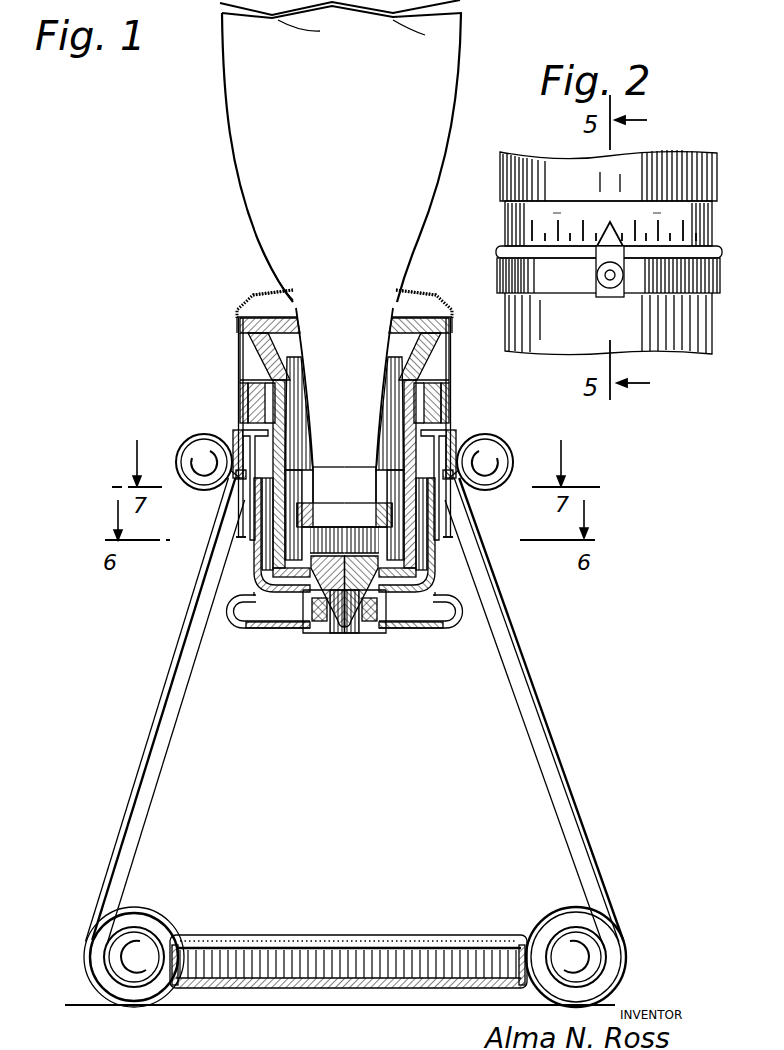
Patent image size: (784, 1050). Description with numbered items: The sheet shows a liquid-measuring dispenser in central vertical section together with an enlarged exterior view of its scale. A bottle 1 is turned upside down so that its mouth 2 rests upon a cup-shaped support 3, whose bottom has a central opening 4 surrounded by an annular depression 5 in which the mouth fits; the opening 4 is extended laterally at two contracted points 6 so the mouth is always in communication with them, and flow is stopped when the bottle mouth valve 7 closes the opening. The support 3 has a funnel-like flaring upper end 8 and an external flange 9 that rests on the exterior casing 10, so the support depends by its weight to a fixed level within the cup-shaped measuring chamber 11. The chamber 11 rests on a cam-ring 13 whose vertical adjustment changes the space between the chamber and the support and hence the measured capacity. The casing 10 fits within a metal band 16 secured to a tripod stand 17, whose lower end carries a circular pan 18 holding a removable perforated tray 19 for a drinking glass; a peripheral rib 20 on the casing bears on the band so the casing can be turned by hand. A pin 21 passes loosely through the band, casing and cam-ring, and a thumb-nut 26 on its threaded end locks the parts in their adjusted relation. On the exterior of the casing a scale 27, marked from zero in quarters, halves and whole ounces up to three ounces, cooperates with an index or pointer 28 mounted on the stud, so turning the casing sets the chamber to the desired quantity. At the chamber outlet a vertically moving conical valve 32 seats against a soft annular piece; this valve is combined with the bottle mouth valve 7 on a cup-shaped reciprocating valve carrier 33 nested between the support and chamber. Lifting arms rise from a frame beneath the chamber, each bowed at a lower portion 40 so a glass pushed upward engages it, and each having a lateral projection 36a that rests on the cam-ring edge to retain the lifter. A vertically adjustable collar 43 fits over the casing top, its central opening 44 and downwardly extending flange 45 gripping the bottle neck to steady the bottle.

In FIG. 1, the bottle 1 is at (246, 146).
In FIG. 1, the mouth 2 is at (345, 505).
In FIG. 1, the support 3 is at (273, 365).
In FIG. 1, the central opening 4 is at (357, 522).
In FIG. 1, the annular depression 5 is at (395, 513).
In FIG. 1, the laterally extended openings 6 is at (300, 528).
In FIG. 1, the bottle mouth valve 7 is at (374, 526).
In FIG. 1, the flaring upper end 8 is at (240, 326).
In FIG. 1, the external flange 9 is at (450, 316).
In FIG. 1, the exterior casing 10 is at (240, 388).
In FIG. 2, the exterior casing 10 is at (510, 215).
In FIG. 1, the measuring chamber 11 is at (282, 592).
In FIG. 1, the cam-ring 13 is at (240, 488).
In FIG. 1, the band 16 is at (236, 478).
In FIG. 2, the band 16 is at (500, 272).
In FIG. 1, the stand 17 is at (170, 672).
In FIG. 1, the circular pan 18 is at (360, 958).
In FIG. 1, the perforated tray 19 is at (424, 940).
In FIG. 1, the peripheral rib 20 is at (240, 430).
In FIG. 2, the pin 21 is at (596, 289).
In FIG. 2, the thumb-nut 26 is at (613, 292).
In FIG. 2, the scale 27 is at (560, 232).
In FIG. 2, the index or pointer 28 is at (606, 240).
In FIG. 1, the conical valve 32 is at (368, 632).
In FIG. 1, the valve carrier 33 is at (440, 556).
In FIG. 1, the lateral projection 36a is at (492, 404).
In FIG. 1, the bowed portion 40 is at (472, 632).
In FIG. 1, the collar 43 is at (252, 302).
In FIG. 2, the collar 43 is at (525, 165).
In FIG. 1, the central opening 44 is at (290, 288).
In FIG. 1, the downwardly extending flange 45 is at (288, 305).